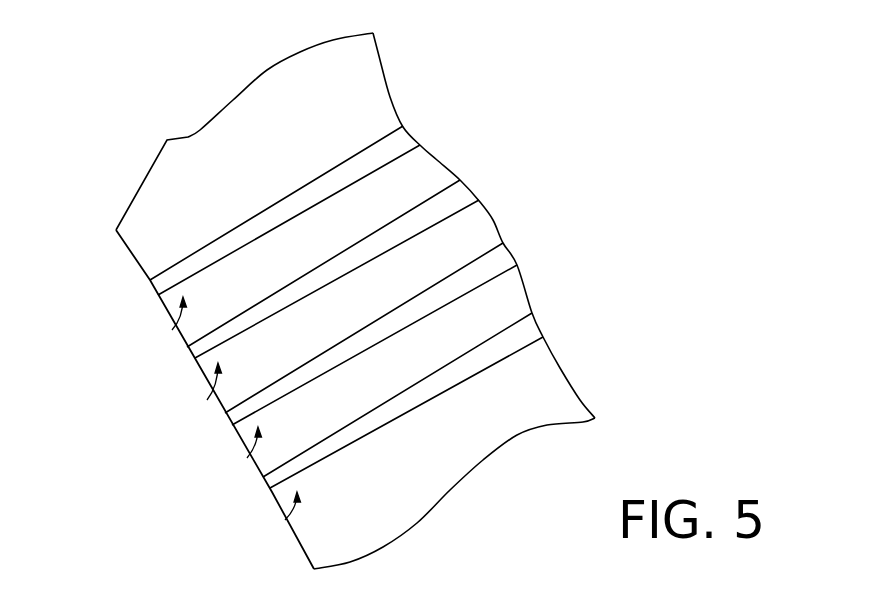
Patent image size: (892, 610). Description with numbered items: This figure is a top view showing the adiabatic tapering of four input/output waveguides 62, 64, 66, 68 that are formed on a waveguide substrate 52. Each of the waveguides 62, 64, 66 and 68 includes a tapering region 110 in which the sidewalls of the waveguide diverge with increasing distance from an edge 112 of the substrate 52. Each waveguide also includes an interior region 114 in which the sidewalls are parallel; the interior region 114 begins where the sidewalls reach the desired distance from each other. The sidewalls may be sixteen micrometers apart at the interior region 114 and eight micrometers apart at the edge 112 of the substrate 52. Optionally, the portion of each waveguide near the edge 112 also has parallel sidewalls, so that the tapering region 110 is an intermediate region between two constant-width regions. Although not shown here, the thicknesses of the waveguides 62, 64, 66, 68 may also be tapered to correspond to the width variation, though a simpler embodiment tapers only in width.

The waveguide substrate 52 is at (228, 127).
The edge 112 is at (127, 252).
The tapering region 110 is at (346, 305).
The interior region 114 is at (383, 139).
The input/output waveguide 68 is at (172, 330).
The input/output waveguide 66 is at (210, 397).
The input/output waveguide 64 is at (247, 458).
The input/output waveguide 62 is at (285, 520).